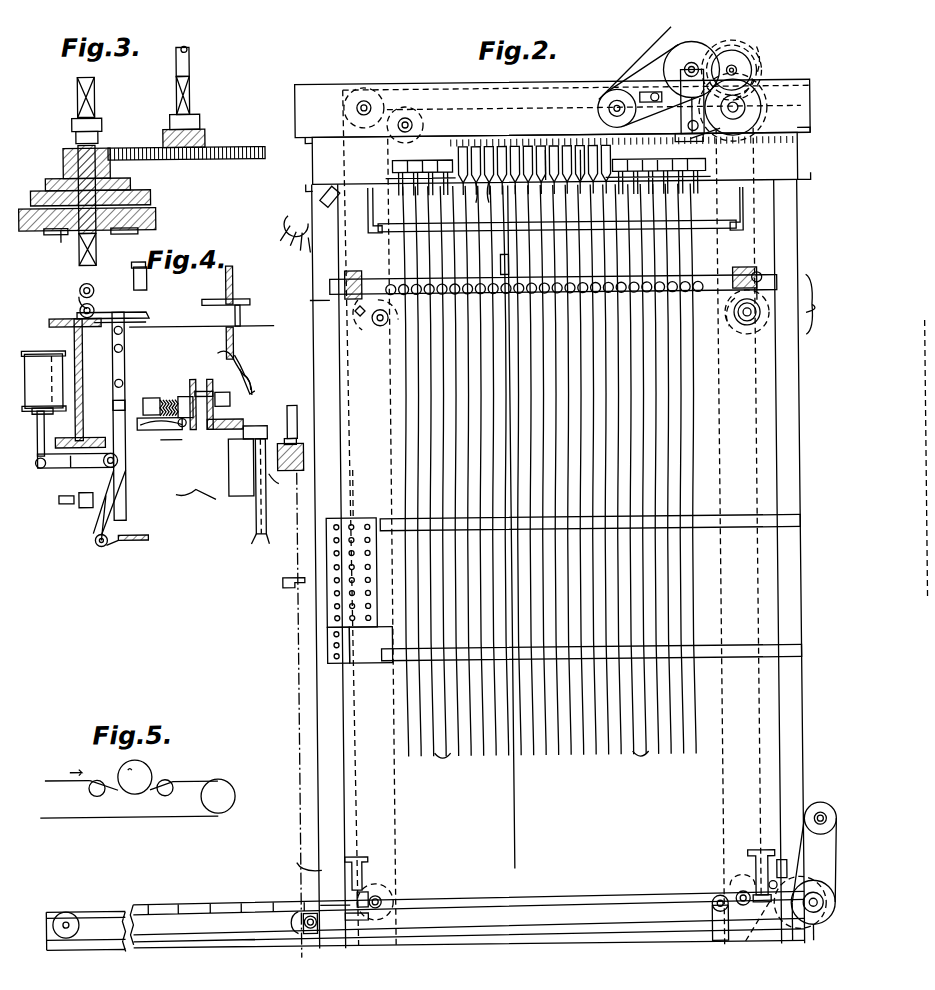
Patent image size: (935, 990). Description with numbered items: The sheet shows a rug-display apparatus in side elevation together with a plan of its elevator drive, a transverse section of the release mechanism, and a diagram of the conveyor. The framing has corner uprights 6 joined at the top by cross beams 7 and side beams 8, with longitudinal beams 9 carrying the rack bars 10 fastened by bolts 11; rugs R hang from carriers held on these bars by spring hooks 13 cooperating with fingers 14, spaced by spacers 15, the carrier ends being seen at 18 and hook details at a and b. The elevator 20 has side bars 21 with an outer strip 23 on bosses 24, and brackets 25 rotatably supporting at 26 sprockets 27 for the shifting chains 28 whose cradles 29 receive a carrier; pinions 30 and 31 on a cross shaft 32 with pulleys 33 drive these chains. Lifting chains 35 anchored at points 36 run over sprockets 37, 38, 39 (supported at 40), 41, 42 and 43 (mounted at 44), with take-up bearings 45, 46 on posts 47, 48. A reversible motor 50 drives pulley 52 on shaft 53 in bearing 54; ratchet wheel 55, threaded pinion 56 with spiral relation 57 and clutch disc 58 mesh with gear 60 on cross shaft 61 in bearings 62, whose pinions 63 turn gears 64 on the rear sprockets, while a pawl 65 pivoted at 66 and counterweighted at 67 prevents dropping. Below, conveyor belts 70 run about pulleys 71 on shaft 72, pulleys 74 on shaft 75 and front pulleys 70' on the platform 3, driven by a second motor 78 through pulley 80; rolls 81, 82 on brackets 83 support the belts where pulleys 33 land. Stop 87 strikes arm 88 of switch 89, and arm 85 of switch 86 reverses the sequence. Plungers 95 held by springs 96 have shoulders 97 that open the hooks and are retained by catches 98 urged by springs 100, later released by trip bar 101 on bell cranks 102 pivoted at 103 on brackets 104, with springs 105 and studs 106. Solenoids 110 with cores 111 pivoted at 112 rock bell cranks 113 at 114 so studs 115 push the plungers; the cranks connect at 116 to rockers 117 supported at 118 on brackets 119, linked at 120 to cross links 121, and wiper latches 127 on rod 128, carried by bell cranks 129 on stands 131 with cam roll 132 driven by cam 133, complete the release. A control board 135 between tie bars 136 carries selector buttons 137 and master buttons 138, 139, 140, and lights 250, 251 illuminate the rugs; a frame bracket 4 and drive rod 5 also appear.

In FIG. 2, the platform 3 is at (293, 679).
In FIG. 2, the frame bracket 4 is at (289, 581).
In FIG. 2, the drive rod 5 is at (648, 78).
In FIG. 2, the corner uprights 6 is at (318, 710).
In FIG. 2, the front and rear cross beams 7 is at (309, 156).
In FIG. 2, the longitudinal side beams 8 is at (329, 158).
In FIG. 4, the longitudinal side beams 8 is at (75, 345).
In FIG. 2, the longitudinal I-beams 9 is at (316, 94).
In FIG. 4, the longitudinal I-beams 9 is at (234, 272).
In FIG. 2, the bars or racks 10 is at (509, 146).
In FIG. 4, the bars or racks 10 is at (227, 336).
In FIG. 4, the bolts 11 is at (242, 315).
In FIG. 2, the spring-actuated hook 13 is at (540, 146).
In FIG. 4, the spring-actuated hook 13 is at (242, 358).
In FIG. 2, the finger 14 is at (566, 158).
In FIG. 4, the finger 14 is at (220, 354).
In FIG. 2, the spacers 15 is at (498, 134).
In FIG. 2, the thread guide element 18 is at (514, 188).
In FIG. 4, the thread guide element 18 is at (288, 440).
In FIG. 2, the elevator means 20 is at (822, 304).
In FIG. 4, the elevator means 20 is at (193, 498).
In FIG. 4, the side bars 21 is at (210, 380).
In FIG. 2, the outer strip 23 is at (354, 279).
In FIG. 4, the bosses 24 is at (220, 430).
In FIG. 2, the brackets 25 is at (377, 326).
In FIG. 4, the brackets 25 is at (228, 460).
In FIG. 2, the sprocket bearing 26 is at (384, 336).
In FIG. 4, the sprocket bearing 26 is at (272, 496).
In FIG. 2, the sprocket 27 is at (767, 101).
In FIG. 4, the sprocket 27 is at (253, 525).
In FIG. 2, the carrier-shifting chains 28 is at (588, 334).
In FIG. 4, the carrier-shifting chains 28 is at (266, 520).
In FIG. 4, the cradles 29 is at (258, 427).
In FIG. 2, the pinions 30 is at (758, 322).
In FIG. 2, the pinions 31 is at (762, 272).
In FIG. 2, the cross shaft 32 is at (764, 278).
In FIG. 2, the pulleys 33 is at (743, 271).
In FIG. 5, the pulleys 33 is at (142, 772).
In FIG. 2, the endless chains 35 is at (488, 78).
In FIG. 2, the anchorage points 36 is at (390, 279).
In FIG. 2, the rear top sprocket 37 is at (758, 116).
In FIG. 2, the front top sprocket 38 is at (372, 96).
In FIG. 2, the bottom front sprocket 39 is at (382, 890).
In FIG. 2, the sprocket support 40 is at (388, 898).
In FIG. 2, the second front top sprocket 41 is at (416, 108).
In FIG. 2, the second rear top sprocket 42 is at (694, 141).
In FIG. 2, the rear bottom sprocket 43 is at (726, 878).
In FIG. 2, the sprocket mounting 44 is at (731, 895).
In FIG. 2, the bearing 45 is at (368, 886).
In FIG. 2, the bearing 46 is at (748, 884).
In FIG. 2, the post 47 is at (362, 866).
In FIG. 2, the post 48 is at (753, 890).
In FIG. 2, the electric motor 50 is at (614, 92).
In FIG. 2, the pulley 52 is at (684, 63).
In FIG. 3, the pulley 52 is at (155, 222).
In FIG. 2, the short shaft 53 is at (696, 67).
In FIG. 3, the short shaft 53 is at (96, 145).
In FIG. 2, the bearing 54 is at (737, 62).
In FIG. 2, the ratchet wheel 55 is at (660, 70).
In FIG. 3, the pinion 56 is at (75, 147).
In FIG. 3, the spiral threaded relation 57 is at (65, 170).
In FIG. 3, the clutch disc 58 is at (130, 185).
In FIG. 2, the large gear 60 is at (755, 50).
In FIG. 3, the large gear 60 is at (256, 148).
In FIG. 2, the cross shaft 61 is at (761, 58).
In FIG. 3, the cross shaft 61 is at (192, 65).
In FIG. 3, the bearings 62 is at (192, 95).
In FIG. 2, the pinions 63 is at (772, 70).
In FIG. 3, the pinions 63 is at (202, 135).
In FIG. 2, the gears 64 is at (768, 82).
In FIG. 2, the pawl 65 is at (680, 101).
In FIG. 3, the pawl 65 is at (150, 197).
In FIG. 2, the pawl pivot 66 is at (679, 139).
In FIG. 2, the counterweight 67 is at (652, 96).
In FIG. 2, the conveyor belts 70 is at (425, 925).
In FIG. 5, the conveyor belts 70 is at (129, 799).
In FIG. 2, the front pulleys 70' is at (57, 909).
In FIG. 2, the pulleys 71 is at (809, 928).
In FIG. 5, the pulleys 71 is at (222, 794).
In FIG. 2, the bottom cross shaft 72 is at (818, 947).
In FIG. 2, the pulleys 74 is at (293, 925).
In FIG. 2, the intermediate cross shaft 75 is at (305, 933).
In FIG. 2, the second electric motor 78 is at (817, 805).
In FIG. 2, the pulley 80 is at (809, 884).
In FIG. 2, the supporting roll 81 is at (706, 906).
In FIG. 5, the supporting roll 81 is at (90, 792).
In FIG. 2, the supporting roll 82 is at (755, 948).
In FIG. 5, the supporting roll 82 is at (160, 793).
In FIG. 2, the brackets 83 is at (717, 942).
In FIG. 2, the switch arm 85 is at (344, 891).
In FIG. 2, the switch 86 is at (352, 304).
In FIG. 2, the stop 87 is at (762, 314).
In FIG. 2, the switch arm 88 is at (768, 882).
In FIG. 2, the magnetic locking spring-opening switch 89 is at (782, 864).
In FIG. 2, the plungers 95 is at (444, 280).
In FIG. 4, the plungers 95 is at (150, 398).
In FIG. 4, the coil springs 96 is at (183, 395).
In FIG. 4, the shoulder 97 is at (258, 398).
In FIG. 4, the spring-pressed catch 98 is at (160, 432).
In FIG. 4, the spring means 100 is at (175, 443).
In FIG. 2, the trip bar 101 is at (485, 228).
In FIG. 4, the trip bar 101 is at (147, 538).
In FIG. 4, the bell crank levers 102 is at (105, 518).
In FIG. 4, the pivot 103 is at (104, 545).
In FIG. 2, the brackets 104 is at (375, 196).
In FIG. 4, the brackets 104 is at (108, 480).
In FIG. 4, the expansion springs 105 is at (82, 507).
In FIG. 4, the slidable stud 106 is at (60, 503).
In FIG. 2, the solenoids 110 is at (396, 159).
In FIG. 4, the solenoids 110 is at (34, 352).
In FIG. 2, the core 111 is at (402, 178).
In FIG. 4, the core 111 is at (40, 415).
In FIG. 4, the pivot 112 is at (298, 402).
In FIG. 4, the bell crank 113 is at (70, 462).
In FIG. 4, the pivot 114 is at (117, 463).
In FIG. 4, the stud 115 is at (140, 425).
In FIG. 4, the pivot 116 is at (119, 386).
In FIG. 4, the rocker 117 is at (113, 372).
In FIG. 4, the rocker support 118 is at (124, 332).
In FIG. 4, the brackets 119 is at (124, 350).
In FIG. 4, the pivot 120 is at (135, 322).
In FIG. 4, the cross link 121 is at (268, 328).
In FIG. 4, the wiper latches 127 is at (135, 312).
In FIG. 4, the rod 128 is at (81, 310).
In FIG. 4, the bell cranks 129 is at (83, 285).
In FIG. 4, the stands 131 is at (80, 296).
In FIG. 4, the cam roll 132 is at (148, 285).
In FIG. 3, the cam 133 is at (62, 236).
In FIG. 4, the cam 133 is at (136, 266).
In FIG. 2, the selective control board 135 is at (357, 498).
In FIG. 2, the tie bars 136 is at (733, 517).
In FIG. 2, the buttons 137 is at (366, 498).
In FIG. 2, the down button 138 is at (331, 643).
In FIG. 2, the up button 139 is at (331, 632).
In FIG. 2, the stop button 140 is at (331, 654).
In FIG. 2, the light source 250 is at (298, 213).
In FIG. 2, the light source 251 is at (323, 193).
In FIG. 2, the rug R is at (522, 803).
In FIG. 4, the rug R is at (283, 484).
In FIG. 2, the point a is at (305, 856).
In FIG. 2, the point b is at (316, 289).